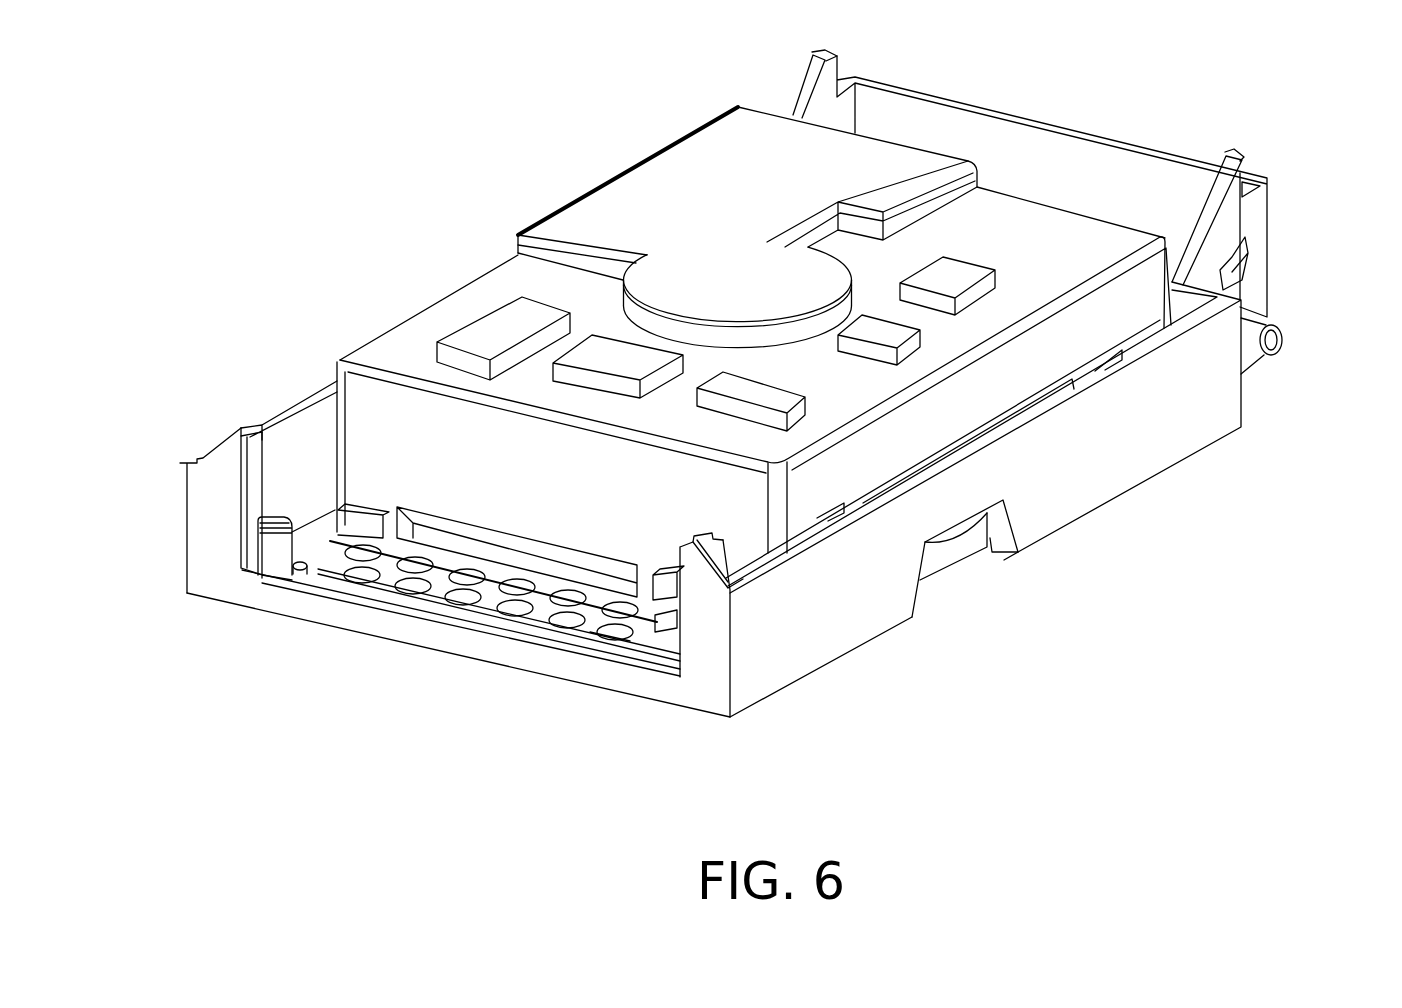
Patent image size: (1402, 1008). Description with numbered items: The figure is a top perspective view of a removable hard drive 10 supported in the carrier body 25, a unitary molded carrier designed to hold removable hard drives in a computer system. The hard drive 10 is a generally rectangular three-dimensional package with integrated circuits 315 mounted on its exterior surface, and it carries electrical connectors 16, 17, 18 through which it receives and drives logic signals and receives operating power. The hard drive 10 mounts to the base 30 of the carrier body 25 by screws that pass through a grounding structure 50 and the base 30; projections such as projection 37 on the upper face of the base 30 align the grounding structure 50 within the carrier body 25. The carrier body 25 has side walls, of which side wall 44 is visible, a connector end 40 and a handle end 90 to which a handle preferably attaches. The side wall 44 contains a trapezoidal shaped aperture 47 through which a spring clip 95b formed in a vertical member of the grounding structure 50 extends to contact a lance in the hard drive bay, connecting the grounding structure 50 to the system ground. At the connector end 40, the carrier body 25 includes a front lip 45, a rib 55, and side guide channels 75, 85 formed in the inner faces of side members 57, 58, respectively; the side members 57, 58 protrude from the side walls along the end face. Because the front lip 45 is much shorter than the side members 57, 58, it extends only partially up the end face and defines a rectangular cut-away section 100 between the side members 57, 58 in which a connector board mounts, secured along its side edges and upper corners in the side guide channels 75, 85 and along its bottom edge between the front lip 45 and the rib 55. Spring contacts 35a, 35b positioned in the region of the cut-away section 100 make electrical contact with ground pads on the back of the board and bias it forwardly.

The removable hard drive 10 is at (427, 318).
The integrated circuits 315 is at (500, 324).
The handle end 90 is at (1305, 252).
The side wall 44 is at (1167, 433).
The spring clip 95b is at (957, 553).
The trapezoidal shaped aperture 47 is at (933, 598).
The carrier body 25 is at (785, 708).
The side member 58 is at (705, 660).
The side guide channel 85 is at (728, 548).
The front lip 45 is at (497, 647).
The base 30 is at (432, 593).
The rib 55 is at (600, 645).
The spring contact 35b is at (663, 657).
The electrical connector 16 is at (480, 535).
The electrical connector 17 is at (665, 571).
The electrical connector 18 is at (370, 522).
The connector end 40 is at (126, 446).
The side member 57 is at (207, 502).
The side guide channel 75 is at (250, 511).
The rectangular cut-away section 100 is at (278, 477).
The grounding structure 50 is at (318, 538).
The spring contact 35a is at (273, 563).
The projection 37 is at (298, 580).